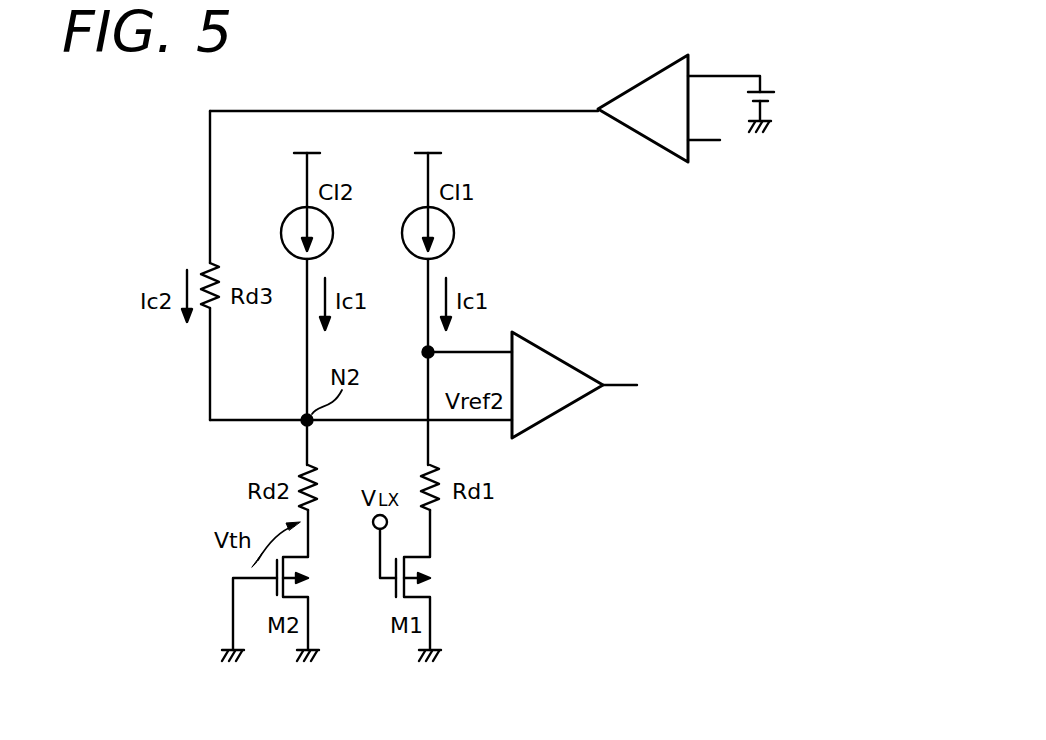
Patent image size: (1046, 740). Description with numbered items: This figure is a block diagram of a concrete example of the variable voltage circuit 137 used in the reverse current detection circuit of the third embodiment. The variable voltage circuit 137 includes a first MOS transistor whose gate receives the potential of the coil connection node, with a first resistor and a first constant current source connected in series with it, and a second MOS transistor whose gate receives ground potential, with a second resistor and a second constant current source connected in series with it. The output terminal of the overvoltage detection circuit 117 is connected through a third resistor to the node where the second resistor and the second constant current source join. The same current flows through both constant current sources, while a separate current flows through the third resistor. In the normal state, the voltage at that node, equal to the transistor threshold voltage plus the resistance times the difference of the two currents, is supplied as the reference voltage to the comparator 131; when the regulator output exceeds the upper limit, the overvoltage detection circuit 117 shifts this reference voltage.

The overvoltage detection circuit 117 is at (648, 142).
The comparator 131 is at (563, 353).
The variable voltage circuit 137 is at (457, 683).